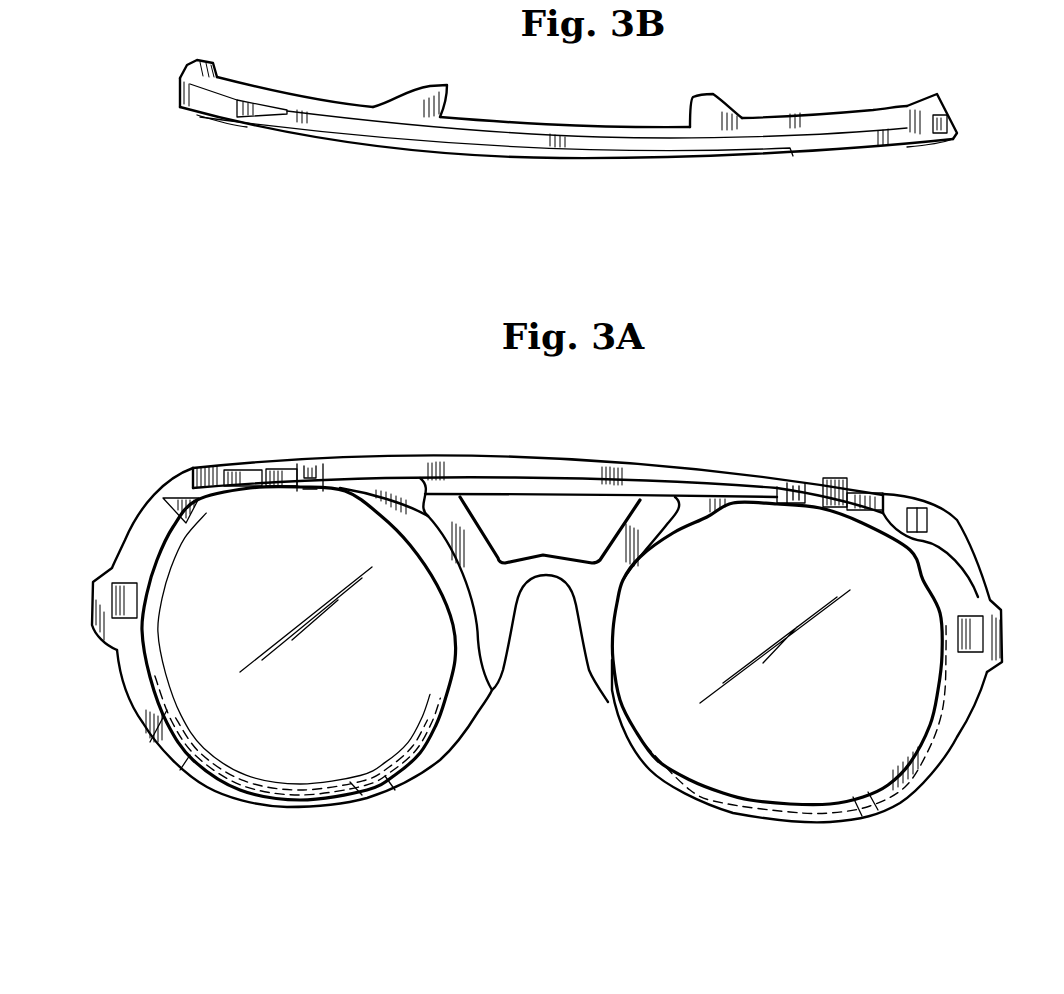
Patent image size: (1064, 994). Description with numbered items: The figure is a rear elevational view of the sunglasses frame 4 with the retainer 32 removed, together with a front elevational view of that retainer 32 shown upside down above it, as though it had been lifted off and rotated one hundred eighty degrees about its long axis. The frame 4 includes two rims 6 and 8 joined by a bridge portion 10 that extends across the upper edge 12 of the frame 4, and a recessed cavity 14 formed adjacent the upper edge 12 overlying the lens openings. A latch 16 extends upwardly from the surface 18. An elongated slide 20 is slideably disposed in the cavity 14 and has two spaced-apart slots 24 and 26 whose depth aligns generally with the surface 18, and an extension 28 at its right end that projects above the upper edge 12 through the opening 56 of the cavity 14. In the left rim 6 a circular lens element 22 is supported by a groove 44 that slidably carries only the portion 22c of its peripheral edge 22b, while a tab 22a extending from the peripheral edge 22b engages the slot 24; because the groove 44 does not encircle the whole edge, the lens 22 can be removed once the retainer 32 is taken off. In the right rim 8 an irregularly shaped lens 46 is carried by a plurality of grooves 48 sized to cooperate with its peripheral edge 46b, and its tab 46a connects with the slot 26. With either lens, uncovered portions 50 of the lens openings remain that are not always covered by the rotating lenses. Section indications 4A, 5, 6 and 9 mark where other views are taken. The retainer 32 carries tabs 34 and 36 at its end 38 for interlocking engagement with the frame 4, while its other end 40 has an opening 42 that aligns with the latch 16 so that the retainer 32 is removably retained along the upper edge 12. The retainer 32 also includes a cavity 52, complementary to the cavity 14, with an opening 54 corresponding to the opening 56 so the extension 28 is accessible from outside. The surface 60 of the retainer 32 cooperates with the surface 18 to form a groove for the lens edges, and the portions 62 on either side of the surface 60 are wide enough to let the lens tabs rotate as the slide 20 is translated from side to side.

In FIG. 3A, the frame 4 is at (143, 528).
In FIG. 3A, the section line 4A is at (112, 672).
In FIG. 3A, the section line 5 is at (555, 458).
In FIG. 3A, the rim 6 is at (183, 770).
In FIG. 3A, the rim 8 is at (930, 767).
In FIG. 3A, the section line 9 is at (908, 520).
In FIG. 3A, the bridge portion 10 is at (473, 448).
In FIG. 3A, the upper edge 12 is at (527, 458).
In FIG. 3A, the recessed cavity 14 is at (230, 470).
In FIG. 3A, the latch 16 is at (915, 513).
In FIG. 3A, the surface 18 is at (363, 490).
In FIG. 3A, the slide 20 is at (600, 465).
In FIG. 3A, the lens element 22 is at (258, 757).
In FIG. 3A, the tab 22a is at (300, 467).
In FIG. 3A, the peripheral edge 22b is at (150, 742).
In FIG. 3A, the portion of peripheral edge 22c is at (373, 790).
In FIG. 3A, the slot 24 is at (307, 470).
In FIG. 3A, the slot 26 is at (800, 495).
In FIG. 3A, the extension 28 is at (840, 487).
In FIG. 3B, the retainer 32 is at (550, 123).
In FIG. 3B, the tab 34 is at (180, 97).
In FIG. 3B, the tab 36 is at (195, 72).
In FIG. 3B, the end 38 is at (200, 123).
In FIG. 3B, the end 40 is at (932, 157).
In FIG. 3B, the opening 42 is at (953, 117).
In FIG. 3A, the groove 44 is at (287, 790).
In FIG. 3A, the lens 46 is at (807, 773).
In FIG. 3A, the tab 46a is at (787, 483).
In FIG. 3A, the peripheral edge 46b is at (857, 797).
In FIG. 3A, the grooves 48 is at (627, 722).
In FIG. 3A, the uncovered portions 50 is at (160, 553).
In FIG. 3B, the cavity 52 is at (347, 123).
In FIG. 3B, the opening 54 is at (827, 150).
In FIG. 3A, the opening 56 is at (742, 477).
In FIG. 3B, the surface 60 is at (343, 97).
In FIG. 3B, the portions 62 is at (265, 97).